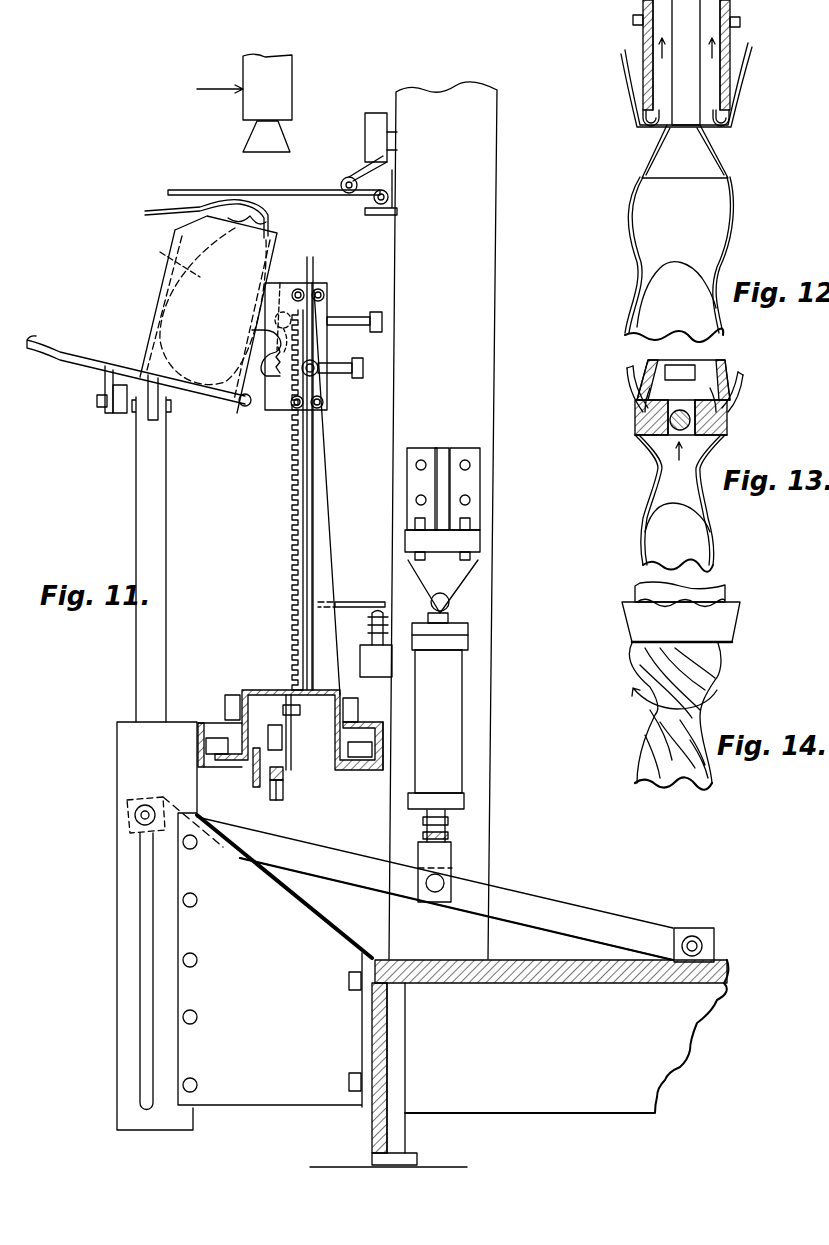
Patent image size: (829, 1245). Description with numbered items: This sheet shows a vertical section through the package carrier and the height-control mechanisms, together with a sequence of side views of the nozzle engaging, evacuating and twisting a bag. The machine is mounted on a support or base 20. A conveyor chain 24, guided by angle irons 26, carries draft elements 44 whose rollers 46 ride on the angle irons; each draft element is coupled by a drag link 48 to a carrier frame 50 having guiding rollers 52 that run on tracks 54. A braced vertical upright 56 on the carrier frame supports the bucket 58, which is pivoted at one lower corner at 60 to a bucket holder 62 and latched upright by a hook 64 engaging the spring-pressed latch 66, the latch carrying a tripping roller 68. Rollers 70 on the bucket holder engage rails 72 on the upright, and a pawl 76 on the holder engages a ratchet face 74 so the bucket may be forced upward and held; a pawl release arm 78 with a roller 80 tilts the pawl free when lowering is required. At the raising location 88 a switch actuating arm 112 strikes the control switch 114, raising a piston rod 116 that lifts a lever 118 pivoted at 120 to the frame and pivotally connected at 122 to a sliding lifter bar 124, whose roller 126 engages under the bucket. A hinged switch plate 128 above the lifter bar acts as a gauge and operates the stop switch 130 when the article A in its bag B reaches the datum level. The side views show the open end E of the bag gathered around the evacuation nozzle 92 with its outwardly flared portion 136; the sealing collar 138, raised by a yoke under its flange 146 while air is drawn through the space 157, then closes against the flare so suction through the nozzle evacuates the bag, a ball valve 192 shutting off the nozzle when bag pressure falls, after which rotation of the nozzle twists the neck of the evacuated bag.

In FIG. 11, the support or base 20 is at (548, 1090).
In FIG. 11, the conveyor chain 24 is at (283, 795).
In FIG. 11, the angle irons 26 is at (253, 775).
In FIG. 11, the draft element 44 is at (291, 748).
In FIG. 11, the rollers 46 is at (267, 725).
In FIG. 11, the drag link 48 is at (300, 710).
In FIG. 11, the carrier frame 50 is at (274, 690).
In FIG. 11, the guiding rollers 52 is at (232, 696).
In FIG. 11, the tracks 54 is at (206, 746).
In FIG. 11, the vertical upright 56 is at (325, 535).
In FIG. 11, the article carrier or bucket 58 is at (162, 298).
In FIG. 11, the pivot 60 is at (240, 406).
In FIG. 11, the bucket holder 62 is at (262, 412).
In FIG. 11, the hook 64 is at (252, 333).
In FIG. 11, the spring-pressed latch 66 is at (275, 375).
In FIG. 11, the tripping roller 68 is at (358, 378).
In FIG. 11, the rollers 70 is at (303, 284).
In FIG. 11, the rails 72 is at (314, 495).
In FIG. 11, the ratchet face 74 is at (292, 540).
In FIG. 11, the pawl 76 is at (287, 303).
In FIG. 11, the pawl release arm 78 is at (350, 317).
In FIG. 11, the roller 80 is at (377, 312).
In FIG. 11, the raising location 88 is at (126, 676).
In FIG. 11, the evacuation nozzle 92 is at (220, 79).
In FIG. 12, the evacuation nozzle 92 is at (690, 88).
In FIG. 11, the switch actuating arm 112 is at (357, 600).
In FIG. 11, the control switch 114 is at (364, 648).
In FIG. 11, the piston rod 116 is at (452, 838).
In FIG. 11, the lever 118 is at (527, 902).
In FIG. 11, the pivot 120 is at (705, 932).
In FIG. 11, the pivotal connection 122 is at (135, 815).
In FIG. 11, the sliding lifter bar 124 is at (140, 512).
In FIG. 11, the roller 126 is at (150, 416).
In FIG. 11, the hinged switch plate 128 is at (310, 190).
In FIG. 11, the stop switch 130 is at (373, 118).
In FIG. 12, the outwardly flared portion 136 is at (698, 167).
In FIG. 11, the sealing collar or cylinder 138 is at (278, 82).
In FIG. 12, the sealing collar or cylinder 138 is at (640, 42).
In FIG. 13, the sealing collar or cylinder 138 is at (648, 361).
In FIG. 14, the sealing collar or cylinder 138 is at (710, 597).
In FIG. 12, the flange 146 is at (632, 20).
In FIG. 12, the space 157 is at (741, 19).
In FIG. 13, the ball valve 192 is at (675, 433).
In FIG. 11, the article A is at (170, 258).
In FIG. 12, the article A is at (667, 293).
In FIG. 13, the article A is at (668, 531).
In FIG. 11, the bag B is at (268, 222).
In FIG. 12, the bag B is at (626, 212).
In FIG. 13, the bag B is at (655, 482).
In FIG. 14, the bag B is at (652, 742).
In FIG. 11, the open end of the bag E is at (199, 209).
In FIG. 12, the open end of the bag E is at (635, 82).
In FIG. 13, the open end of the bag E is at (628, 388).
In FIG. 14, the open end of the bag E is at (636, 614).